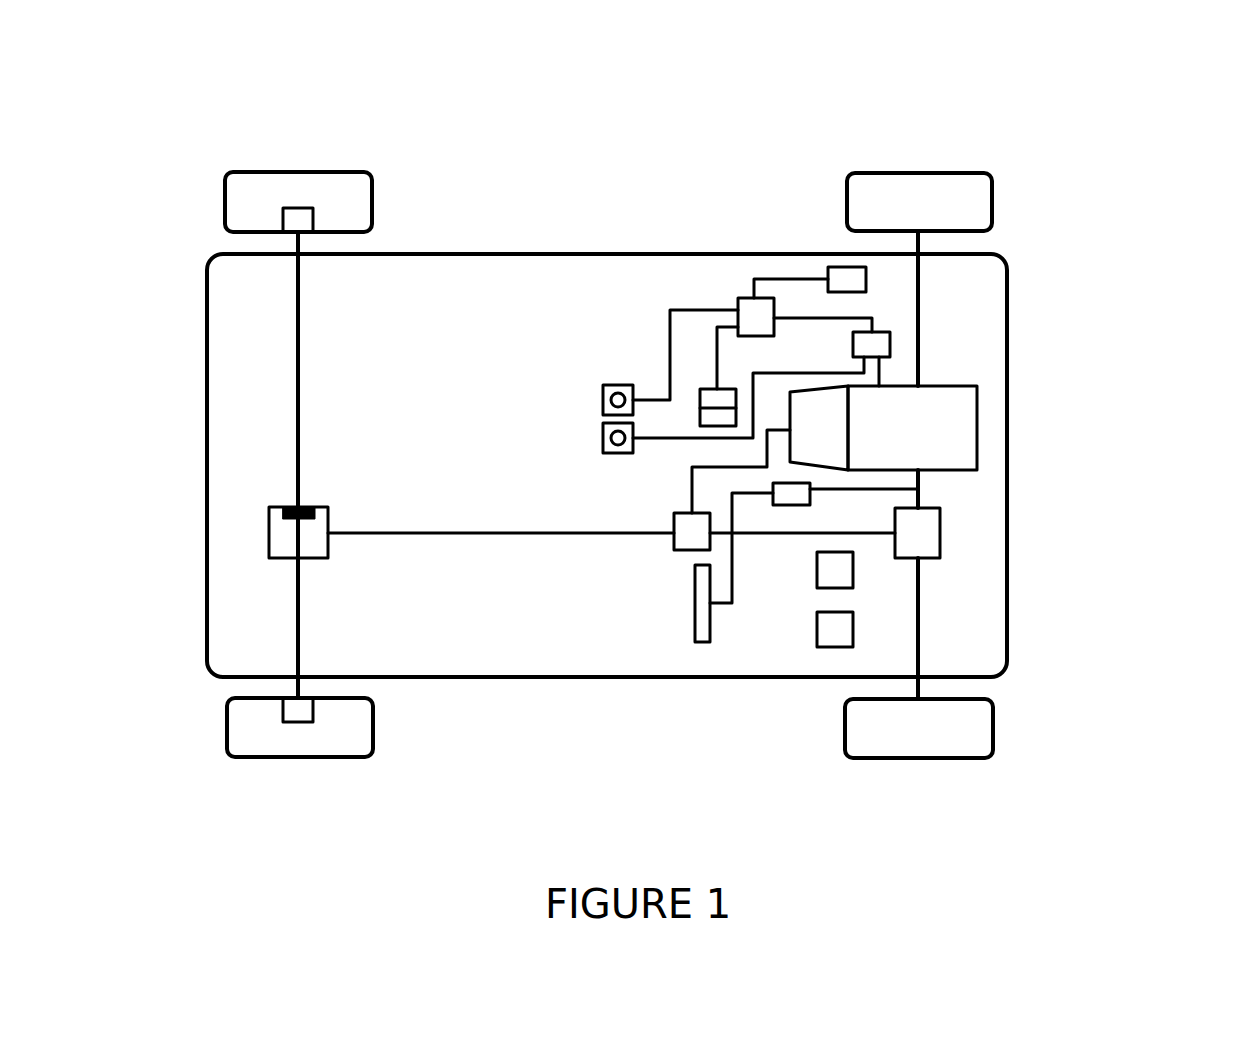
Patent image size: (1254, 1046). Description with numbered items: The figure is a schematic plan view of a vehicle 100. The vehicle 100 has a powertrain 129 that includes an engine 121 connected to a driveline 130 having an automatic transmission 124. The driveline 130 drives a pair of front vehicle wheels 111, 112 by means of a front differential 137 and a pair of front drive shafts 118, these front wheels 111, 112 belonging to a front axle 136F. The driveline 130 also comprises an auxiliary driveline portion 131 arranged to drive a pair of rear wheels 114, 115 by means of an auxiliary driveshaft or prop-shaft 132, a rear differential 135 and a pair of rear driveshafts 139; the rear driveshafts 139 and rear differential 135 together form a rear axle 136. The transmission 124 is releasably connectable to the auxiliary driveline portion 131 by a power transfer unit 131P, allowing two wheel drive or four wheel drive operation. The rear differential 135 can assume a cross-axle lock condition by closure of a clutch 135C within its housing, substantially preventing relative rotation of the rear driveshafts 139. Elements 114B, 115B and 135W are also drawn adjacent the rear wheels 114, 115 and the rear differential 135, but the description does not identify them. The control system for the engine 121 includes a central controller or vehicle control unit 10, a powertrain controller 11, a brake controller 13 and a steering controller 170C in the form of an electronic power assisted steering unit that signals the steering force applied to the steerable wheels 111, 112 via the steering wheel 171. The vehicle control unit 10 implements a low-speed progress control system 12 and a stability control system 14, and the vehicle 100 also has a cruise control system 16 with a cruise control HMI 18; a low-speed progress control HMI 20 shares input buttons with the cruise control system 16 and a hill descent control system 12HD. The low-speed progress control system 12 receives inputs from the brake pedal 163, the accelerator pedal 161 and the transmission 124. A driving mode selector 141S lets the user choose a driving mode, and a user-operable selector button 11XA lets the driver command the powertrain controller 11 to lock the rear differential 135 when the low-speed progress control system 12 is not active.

The vehicle 100 is at (1160, 190).
The front vehicle wheel 111 is at (970, 192).
The front vehicle wheel 112 is at (968, 740).
The rear wheel 114 is at (268, 192).
The front wheel brake 114B is at (283, 218).
The rear wheel 115 is at (255, 735).
The rear wheel brake 115B is at (283, 710).
The front drive shaft 118 is at (918, 299).
The powertrain controller 11 is at (882, 346).
The user-operable selector button 11XA is at (603, 438).
The brake controller 13 is at (837, 275).
The vehicle control unit 10 is at (727, 240).
The low-speed progress control system 12 is at (727, 240).
The stability control system 14 is at (727, 240).
The cruise control system 16 is at (727, 240).
The hill descent control system 12HD is at (749, 308).
The cruise control HMI 18 is at (665, 298).
The low-speed progress control HMI 20 is at (700, 390).
The engine 121 is at (945, 412).
The automatic transmission 124 is at (818, 405).
The powertrain 129 is at (1153, 428).
The driveline 130 is at (1118, 658).
The auxiliary driveline portion 131 is at (497, 728).
The power transfer unit 131P is at (686, 540).
The auxiliary driveshaft 132 is at (457, 537).
The rear differential 135 is at (269, 532).
The clutch 135C is at (211, 489).
The clutch shaft 135W is at (201, 562).
The rear axle 136 is at (272, 371).
The front axle 136F is at (935, 489).
The front differential 137 is at (940, 533).
The rear driveshaft 139 is at (298, 320).
The driving mode selector 141S is at (602, 397).
The accelerator pedal 161 is at (833, 637).
The brake pedal 163 is at (828, 570).
The steering controller 170C is at (790, 498).
The steering wheel 171 is at (703, 640).